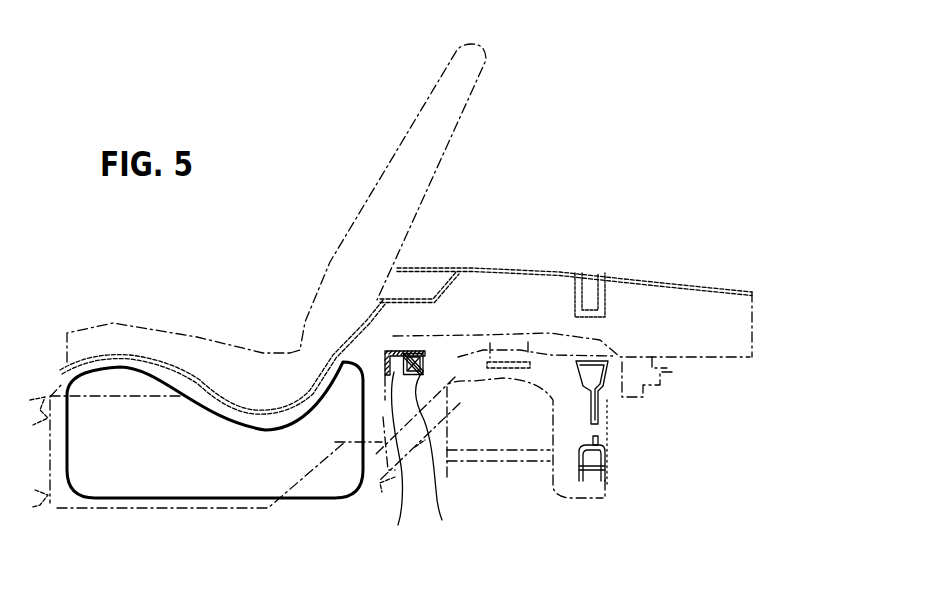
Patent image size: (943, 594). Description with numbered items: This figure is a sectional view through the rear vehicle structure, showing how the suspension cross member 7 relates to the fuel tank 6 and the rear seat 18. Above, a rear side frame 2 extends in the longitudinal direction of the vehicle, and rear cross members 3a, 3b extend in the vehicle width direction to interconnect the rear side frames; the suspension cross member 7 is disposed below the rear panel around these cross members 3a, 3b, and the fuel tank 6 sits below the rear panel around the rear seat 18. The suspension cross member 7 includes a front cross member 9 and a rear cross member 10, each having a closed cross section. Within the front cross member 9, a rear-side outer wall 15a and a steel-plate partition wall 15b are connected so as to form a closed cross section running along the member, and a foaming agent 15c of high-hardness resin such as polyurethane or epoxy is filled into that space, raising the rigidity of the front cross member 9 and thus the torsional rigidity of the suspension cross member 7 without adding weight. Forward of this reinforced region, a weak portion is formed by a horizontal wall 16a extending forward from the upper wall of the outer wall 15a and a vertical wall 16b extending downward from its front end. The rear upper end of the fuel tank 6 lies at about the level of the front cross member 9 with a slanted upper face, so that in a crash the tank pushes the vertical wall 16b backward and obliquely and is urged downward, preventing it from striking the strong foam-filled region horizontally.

The rear side frame 2 is at (704, 290).
The rear cross member 3a is at (452, 286).
The rear cross member 3b is at (607, 300).
The fuel tank 6 is at (298, 503).
The suspension cross member 7 is at (503, 490).
The front cross member 9 is at (429, 449).
The rear cross member 10 is at (600, 398).
The rear-side outer wall 15a is at (432, 363).
The partition wall 15b is at (395, 462).
The foaming agent 15c is at (417, 345).
The horizontal wall 16a is at (395, 352).
The vertical wall 16b is at (385, 352).
The rear seat 18 is at (389, 168).